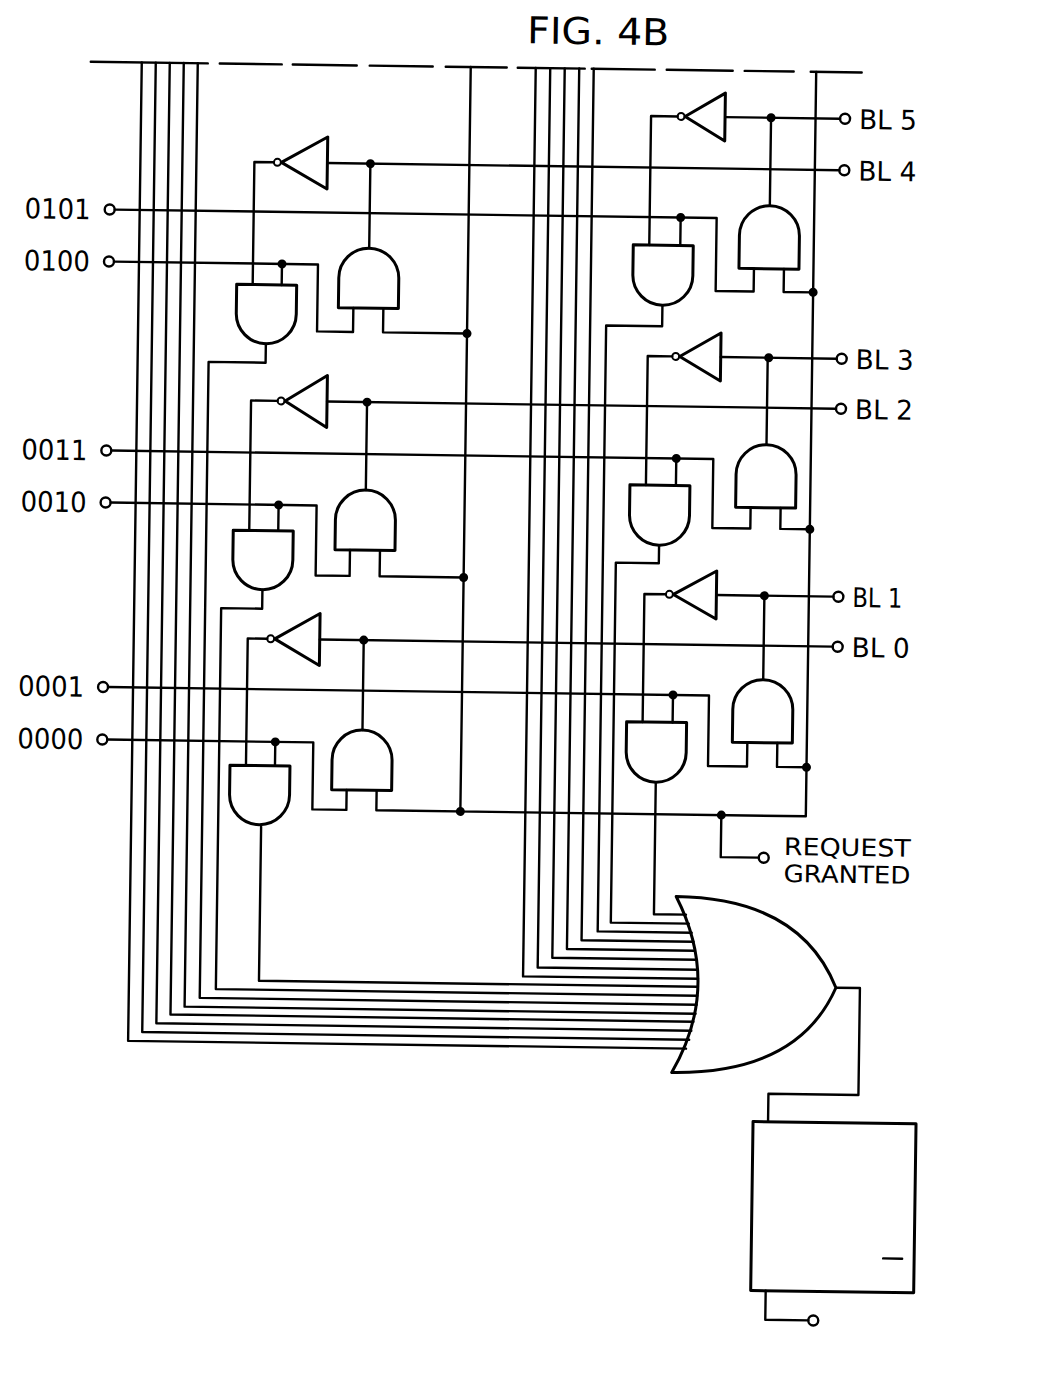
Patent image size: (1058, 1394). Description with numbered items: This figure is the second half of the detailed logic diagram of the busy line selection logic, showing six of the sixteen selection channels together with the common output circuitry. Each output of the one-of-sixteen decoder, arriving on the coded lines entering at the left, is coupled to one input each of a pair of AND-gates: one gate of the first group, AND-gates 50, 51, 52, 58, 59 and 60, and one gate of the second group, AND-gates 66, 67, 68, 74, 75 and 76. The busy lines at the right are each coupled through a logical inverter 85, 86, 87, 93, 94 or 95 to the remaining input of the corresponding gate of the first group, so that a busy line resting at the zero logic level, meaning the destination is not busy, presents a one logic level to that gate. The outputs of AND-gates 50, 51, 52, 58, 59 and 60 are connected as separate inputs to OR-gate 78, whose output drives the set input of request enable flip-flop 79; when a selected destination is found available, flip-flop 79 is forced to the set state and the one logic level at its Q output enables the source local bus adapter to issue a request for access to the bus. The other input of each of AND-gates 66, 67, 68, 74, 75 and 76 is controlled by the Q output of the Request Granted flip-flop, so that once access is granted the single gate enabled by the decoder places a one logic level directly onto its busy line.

The AND-gate 50 is at (262, 299).
The AND-gate 51 is at (260, 539).
The AND-gate 52 is at (274, 813).
The AND-gate 58 is at (676, 282).
The AND-gate 59 is at (655, 493).
The AND-gate 60 is at (669, 759).
The AND-gate 66 is at (385, 273).
The AND-gate 67 is at (390, 510).
The AND-gate 68 is at (385, 749).
The AND-gate 74 is at (788, 246).
The AND-gate 75 is at (783, 478).
The AND-gate 76 is at (783, 715).
The OR-gate 78 is at (813, 946).
The request enable flip-flop 79 is at (761, 1191).
The logical inverter 85 is at (306, 150).
The logical inverter 86 is at (321, 391).
The logical inverter 87 is at (319, 633).
The logical inverter 93 is at (693, 109).
The logical inverter 94 is at (713, 340).
The logical inverter 95 is at (713, 580).